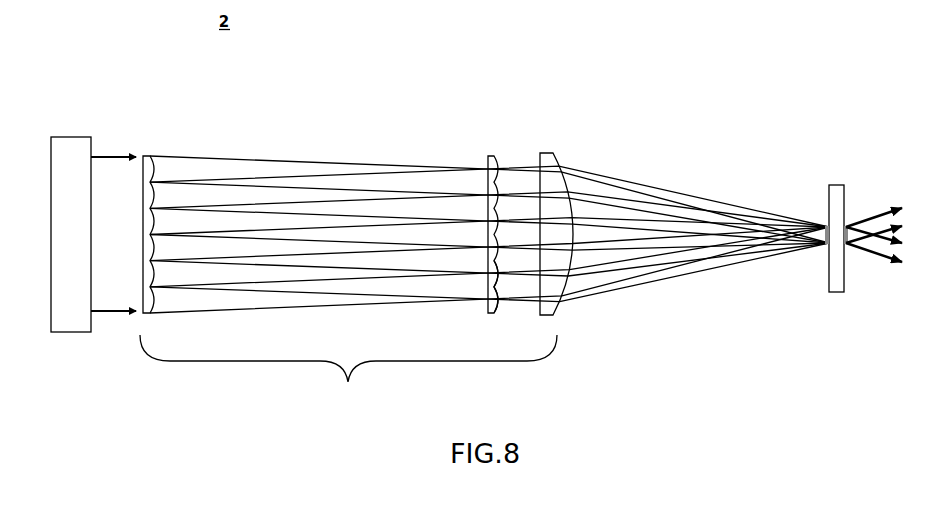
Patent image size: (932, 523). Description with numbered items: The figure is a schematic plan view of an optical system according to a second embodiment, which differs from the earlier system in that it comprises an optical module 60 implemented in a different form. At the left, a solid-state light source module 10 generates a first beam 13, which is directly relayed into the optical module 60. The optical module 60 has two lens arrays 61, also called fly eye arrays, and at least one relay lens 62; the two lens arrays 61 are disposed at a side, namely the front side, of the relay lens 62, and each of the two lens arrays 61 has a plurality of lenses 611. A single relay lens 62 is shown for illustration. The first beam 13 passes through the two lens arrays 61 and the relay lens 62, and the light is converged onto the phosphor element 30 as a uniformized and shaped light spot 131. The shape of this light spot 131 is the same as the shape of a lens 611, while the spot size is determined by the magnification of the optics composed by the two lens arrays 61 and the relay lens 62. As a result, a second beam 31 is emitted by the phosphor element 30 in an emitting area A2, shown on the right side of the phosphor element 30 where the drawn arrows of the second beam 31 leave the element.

The solid-state light source module 10 is at (74, 145).
The first beam 13 is at (341, 171).
The optical module 60 is at (350, 249).
The lens array 61 is at (149, 154).
The lens 611 is at (492, 279).
The relay lens 62 is at (545, 152).
The phosphor element 30 is at (837, 184).
The emitting area A2 is at (838, 222).
The light spot 131 is at (824, 246).
The second beam 31 is at (857, 254).